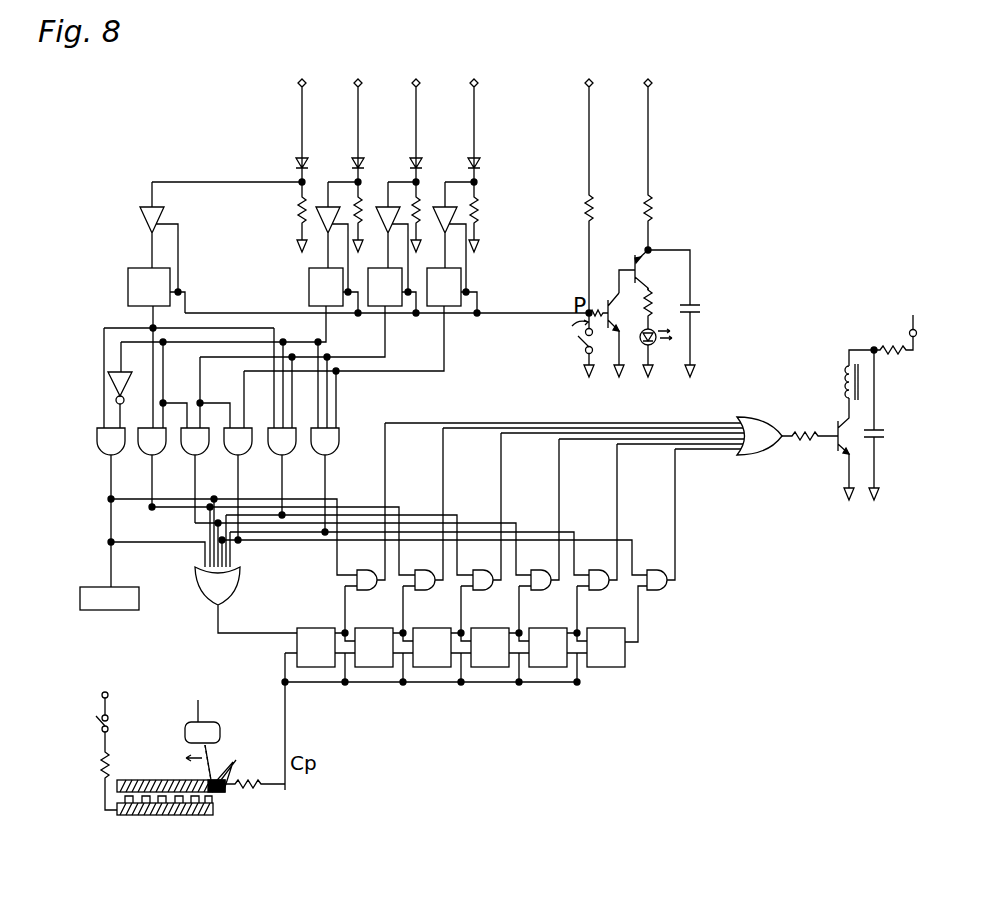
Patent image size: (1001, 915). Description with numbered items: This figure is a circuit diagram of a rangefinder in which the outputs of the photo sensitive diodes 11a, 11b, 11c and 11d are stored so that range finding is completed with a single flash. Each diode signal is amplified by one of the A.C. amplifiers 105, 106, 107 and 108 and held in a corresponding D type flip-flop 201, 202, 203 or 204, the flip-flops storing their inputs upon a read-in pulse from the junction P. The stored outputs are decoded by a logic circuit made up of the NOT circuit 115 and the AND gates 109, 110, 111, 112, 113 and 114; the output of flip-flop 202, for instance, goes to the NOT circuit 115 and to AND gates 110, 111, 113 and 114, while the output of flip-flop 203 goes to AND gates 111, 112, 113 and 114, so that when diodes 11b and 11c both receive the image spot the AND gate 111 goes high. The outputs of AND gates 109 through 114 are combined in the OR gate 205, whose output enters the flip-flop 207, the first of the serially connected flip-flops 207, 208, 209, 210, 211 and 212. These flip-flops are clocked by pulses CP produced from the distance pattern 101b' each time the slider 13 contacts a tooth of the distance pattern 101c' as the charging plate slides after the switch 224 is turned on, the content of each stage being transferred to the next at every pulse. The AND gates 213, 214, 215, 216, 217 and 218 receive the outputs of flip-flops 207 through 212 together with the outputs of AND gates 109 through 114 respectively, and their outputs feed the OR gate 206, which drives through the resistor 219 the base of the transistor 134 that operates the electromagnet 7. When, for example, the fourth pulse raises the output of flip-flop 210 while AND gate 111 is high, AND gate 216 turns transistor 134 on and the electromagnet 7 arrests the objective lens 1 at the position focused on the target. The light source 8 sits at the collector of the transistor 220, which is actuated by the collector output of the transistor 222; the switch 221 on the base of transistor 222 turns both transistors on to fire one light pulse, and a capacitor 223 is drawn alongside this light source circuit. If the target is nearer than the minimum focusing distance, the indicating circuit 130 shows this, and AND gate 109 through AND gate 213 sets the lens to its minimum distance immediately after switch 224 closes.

The photo sensitive diode 11a is at (300, 160).
The photo sensitive diode 11b is at (356, 160).
The photo sensitive diode 11c is at (414, 160).
The photo sensitive diode 11d is at (472, 160).
The A.C. amplifier 105 is at (142, 219).
The A.C. amplifier 106 is at (320, 222).
The A.C. amplifier 107 is at (400, 212).
The A.C. amplifier 108 is at (452, 215).
The D type flip-flop 201 is at (128, 292).
The D type flip-flop 202 is at (309, 292).
The D type flip-flop 203 is at (368, 275).
The D type flip-flop 204 is at (461, 285).
The NOT circuit 115 is at (110, 380).
The AND gate 109 is at (100, 452).
The AND gate 110 is at (141, 452).
The AND gate 111 is at (184, 452).
The AND gate 112 is at (228, 452).
The AND gate 113 is at (272, 452).
The AND gate 114 is at (314, 452).
The indicating circuit 130 is at (86, 598).
The OR gate 205 is at (210, 585).
The OR gate 206 is at (752, 432).
The AND gate 213 is at (365, 568).
The AND gate 214 is at (422, 568).
The AND gate 215 is at (480, 568).
The AND gate 216 is at (538, 568).
The AND gate 217 is at (596, 568).
The AND gate 218 is at (654, 568).
The D type flip-flop 207 is at (318, 665).
The D type flip-flop 208 is at (376, 665).
The D type flip-flop 209 is at (434, 665).
The D type flip-flop 210 is at (492, 665).
The D type flip-flop 211 is at (550, 665).
The D type flip-flop 212 is at (608, 665).
The resistor 219 is at (812, 434).
The transistor 134 is at (845, 450).
The electromagnet 7 is at (848, 375).
The transistor 222 is at (600, 310).
The switch 221 is at (583, 340).
The transistor 220 is at (640, 262).
The light source 8 is at (658, 342).
The capacitor 223 is at (700, 310).
The switch 224 is at (100, 728).
The distance pattern 101b' is at (168, 757).
The distance pattern 101c' is at (165, 835).
The objective lens 1 is at (202, 728).
The slider 13 is at (232, 768).